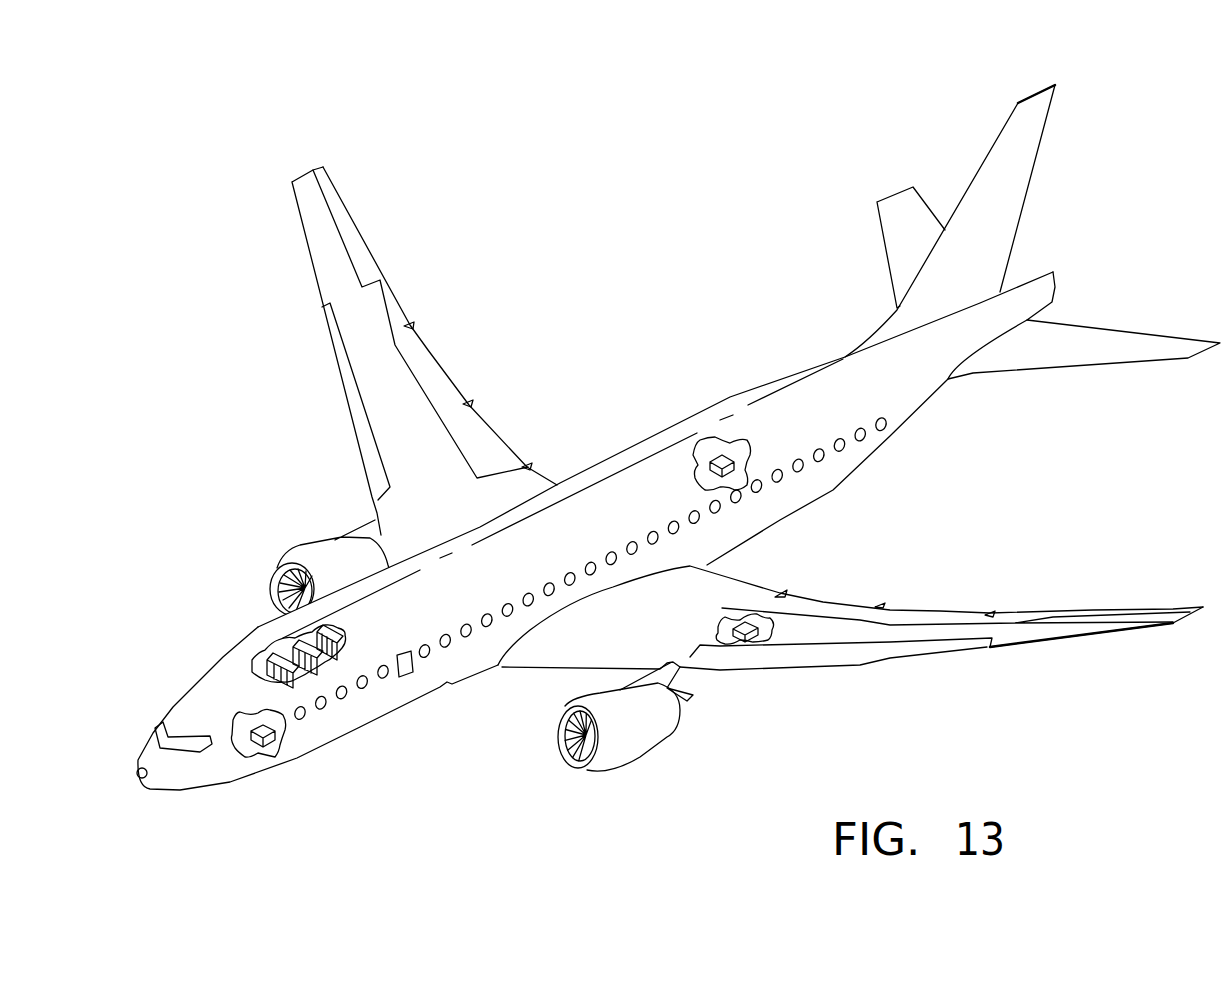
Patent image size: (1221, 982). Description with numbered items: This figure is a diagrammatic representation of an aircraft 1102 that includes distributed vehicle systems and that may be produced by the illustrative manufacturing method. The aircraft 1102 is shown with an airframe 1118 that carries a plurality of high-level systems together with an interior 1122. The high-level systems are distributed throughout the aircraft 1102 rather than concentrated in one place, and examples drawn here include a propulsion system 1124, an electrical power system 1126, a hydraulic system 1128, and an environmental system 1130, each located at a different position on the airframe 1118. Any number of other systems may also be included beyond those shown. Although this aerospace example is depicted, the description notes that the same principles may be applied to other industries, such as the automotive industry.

The aircraft 1102 is at (262, 350).
The airframe 1118 is at (255, 618).
The interior 1122 is at (312, 674).
The propulsion system 1124 is at (307, 557).
The electrical power system 1126 is at (257, 728).
The hydraulic system 1128 is at (743, 620).
The environmental system 1130 is at (713, 453).